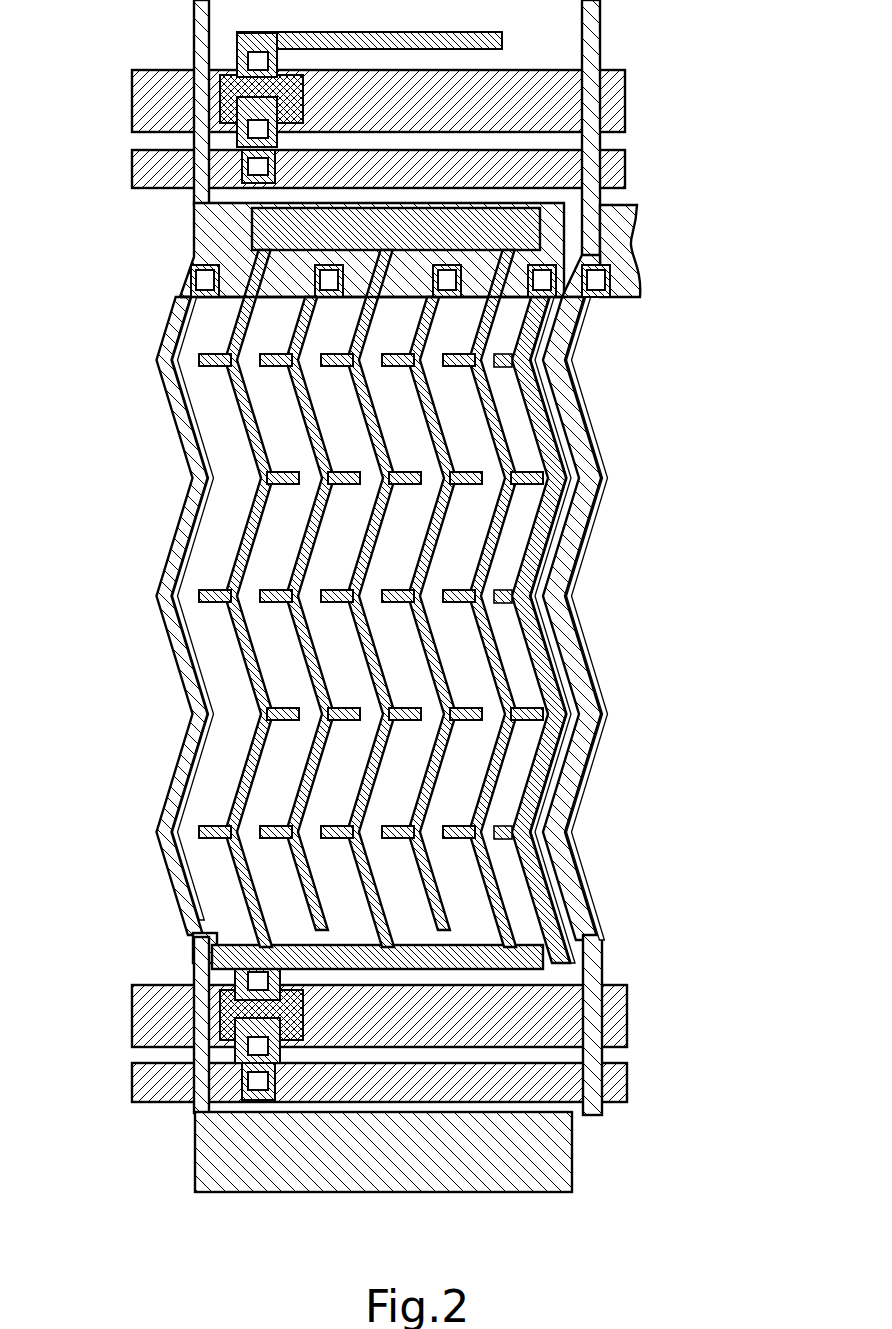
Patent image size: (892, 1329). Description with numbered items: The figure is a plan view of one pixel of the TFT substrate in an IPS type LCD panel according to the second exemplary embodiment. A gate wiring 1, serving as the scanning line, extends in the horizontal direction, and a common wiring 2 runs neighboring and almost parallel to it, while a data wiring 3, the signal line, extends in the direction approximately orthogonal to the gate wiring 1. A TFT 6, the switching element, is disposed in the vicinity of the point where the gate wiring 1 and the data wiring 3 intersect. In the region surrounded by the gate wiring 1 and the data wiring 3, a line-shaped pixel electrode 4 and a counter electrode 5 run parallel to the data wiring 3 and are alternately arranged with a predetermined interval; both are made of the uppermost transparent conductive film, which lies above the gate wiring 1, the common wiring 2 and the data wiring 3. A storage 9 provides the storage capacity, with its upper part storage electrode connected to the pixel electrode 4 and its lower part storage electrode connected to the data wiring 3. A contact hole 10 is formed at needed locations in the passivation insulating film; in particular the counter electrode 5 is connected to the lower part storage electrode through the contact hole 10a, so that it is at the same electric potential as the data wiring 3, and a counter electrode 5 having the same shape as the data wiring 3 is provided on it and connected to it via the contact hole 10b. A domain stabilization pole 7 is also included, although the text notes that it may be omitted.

The gate wiring 1 is at (625, 95).
The common wiring 2 is at (625, 165).
The data wiring 3 is at (195, 20).
The pixel electrode 4 is at (490, 412).
The counter electrode 5 is at (500, 505).
The TFT 6 is at (300, 995).
The domain stabilization pole 7 is at (523, 723).
The storage 9 is at (523, 222).
The contact hole 10 is at (247, 980).
The contact hole 10a is at (497, 300).
The contact hole 10b is at (597, 283).